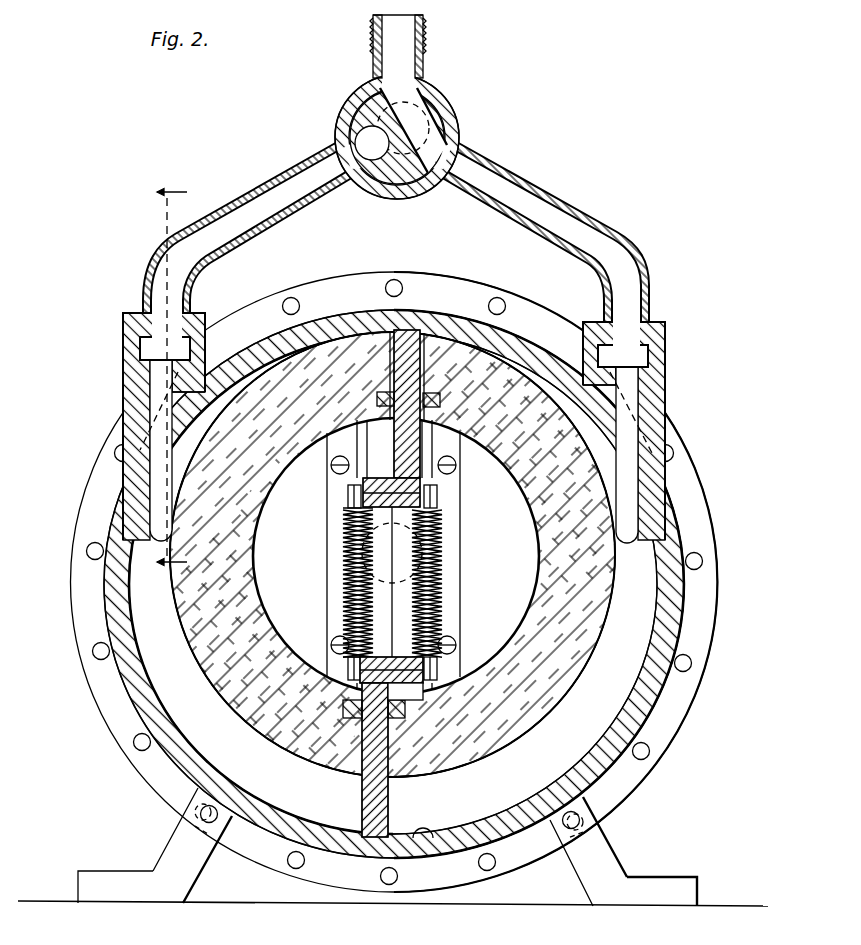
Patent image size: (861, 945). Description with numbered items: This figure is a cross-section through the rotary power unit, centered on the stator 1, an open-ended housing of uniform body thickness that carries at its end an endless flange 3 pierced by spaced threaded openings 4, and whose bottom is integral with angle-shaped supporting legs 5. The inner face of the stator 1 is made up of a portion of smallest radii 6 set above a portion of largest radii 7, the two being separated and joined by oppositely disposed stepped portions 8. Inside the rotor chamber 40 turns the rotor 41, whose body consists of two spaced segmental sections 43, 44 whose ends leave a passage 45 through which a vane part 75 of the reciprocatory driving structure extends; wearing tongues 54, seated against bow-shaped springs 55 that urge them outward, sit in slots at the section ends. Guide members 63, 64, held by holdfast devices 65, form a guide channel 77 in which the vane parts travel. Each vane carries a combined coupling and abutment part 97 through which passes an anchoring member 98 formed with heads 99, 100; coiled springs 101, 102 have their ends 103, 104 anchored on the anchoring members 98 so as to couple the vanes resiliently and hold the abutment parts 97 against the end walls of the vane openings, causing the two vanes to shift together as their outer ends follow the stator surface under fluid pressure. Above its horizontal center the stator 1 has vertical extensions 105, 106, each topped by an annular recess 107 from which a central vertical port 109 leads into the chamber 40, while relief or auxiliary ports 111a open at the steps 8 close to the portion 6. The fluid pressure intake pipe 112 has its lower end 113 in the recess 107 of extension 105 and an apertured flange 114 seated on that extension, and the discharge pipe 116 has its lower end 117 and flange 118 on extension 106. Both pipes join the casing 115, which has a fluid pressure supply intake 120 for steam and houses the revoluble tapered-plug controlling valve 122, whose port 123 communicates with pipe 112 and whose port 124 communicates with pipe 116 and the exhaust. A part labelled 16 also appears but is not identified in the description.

The stator 1 is at (673, 605).
The endless flange 3 is at (627, 787).
The threaded openings 4 is at (703, 664).
The supporting legs 5 is at (175, 845).
The portion of smallest radii 6 is at (446, 258).
The portion of largest radii 7 is at (426, 843).
The stepped portions 8 is at (637, 538).
The screw 16 is at (321, 552).
The rotor chamber 40 is at (470, 796).
The rotor 41 is at (590, 670).
The segmental section 43 is at (290, 745).
The segmental section 44 is at (512, 705).
The passage 45 is at (356, 318).
The wearing tongues 54 is at (425, 380).
The bow-shaped springs 55 is at (468, 395).
The guide member 63 is at (333, 582).
The guide member 64 is at (455, 580).
The holdfast devices 65 is at (463, 552).
The vane part 75 is at (360, 803).
The guide channel 77 is at (365, 470).
The combined coupling and abutment part 97 is at (385, 472).
The anchoring member 98 is at (352, 492).
The head 99 is at (355, 500).
The head 100 is at (437, 500).
The coiled spring 101 is at (345, 565).
The coiled spring 102 is at (445, 565).
The spring ends 103 is at (353, 510).
The spring ends 104 is at (420, 488).
The extension 105 is at (650, 387).
The extension 106 is at (128, 408).
The annular recess 107 is at (150, 355).
The port 109 is at (158, 420).
The relief or auxiliary ports 111a is at (150, 468).
The fluid pressure intake pipe 112 is at (590, 222).
The lower end of intake pipe 113 is at (668, 350).
The apertured flange 114 is at (668, 324).
The casing 115 is at (460, 118).
The discharge pipe 116 is at (272, 196).
The lower end of discharge pipe 117 is at (140, 350).
The apertured flange 118 is at (210, 320).
The fluid pressure supply intake 120 is at (418, 62).
The revoluble controlling valve 122 is at (345, 118).
The valve port 123 is at (420, 118).
The valve port 124 is at (372, 162).